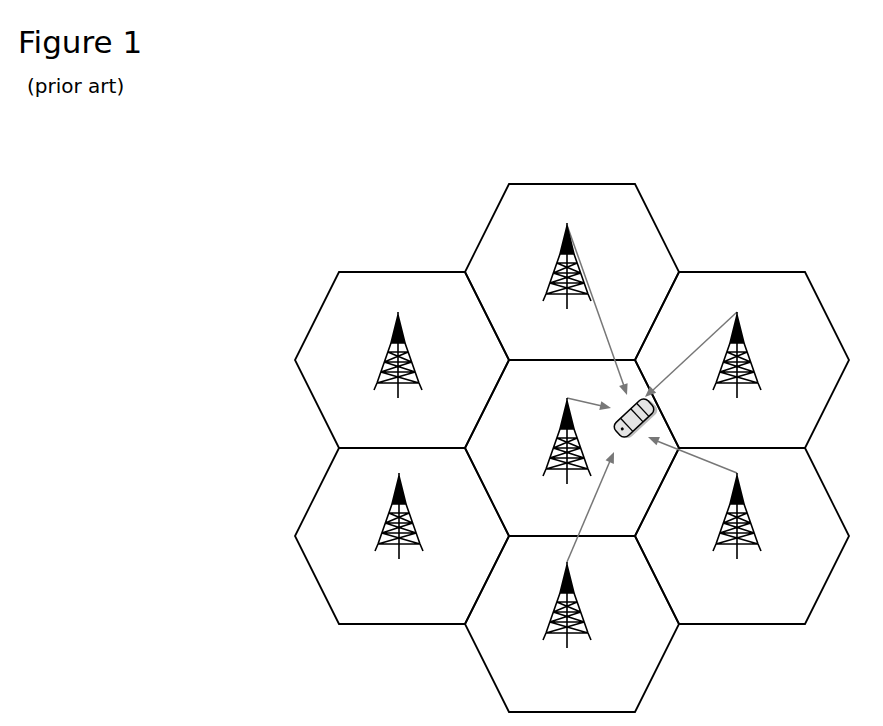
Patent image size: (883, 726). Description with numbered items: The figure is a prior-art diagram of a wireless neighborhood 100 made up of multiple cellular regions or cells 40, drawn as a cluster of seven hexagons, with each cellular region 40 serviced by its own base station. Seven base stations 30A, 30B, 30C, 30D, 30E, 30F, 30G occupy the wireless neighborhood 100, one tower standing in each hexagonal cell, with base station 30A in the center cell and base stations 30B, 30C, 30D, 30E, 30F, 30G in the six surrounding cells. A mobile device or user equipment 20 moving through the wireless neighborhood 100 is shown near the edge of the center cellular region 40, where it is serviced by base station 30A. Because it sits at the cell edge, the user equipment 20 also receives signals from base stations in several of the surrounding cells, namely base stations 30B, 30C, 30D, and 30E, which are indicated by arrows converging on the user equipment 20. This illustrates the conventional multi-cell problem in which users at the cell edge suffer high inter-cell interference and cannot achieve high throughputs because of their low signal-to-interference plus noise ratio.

The wireless neighborhood 100 is at (572, 387).
The cellular region 40 is at (750, 349).
The user equipment 20 is at (612, 403).
The base station 30A is at (544, 441).
The base station 30B is at (544, 266).
The base station 30C is at (716, 354).
The base station 30D is at (544, 605).
The base station 30E is at (716, 516).
The base station 30F is at (382, 342).
The base station 30G is at (382, 510).